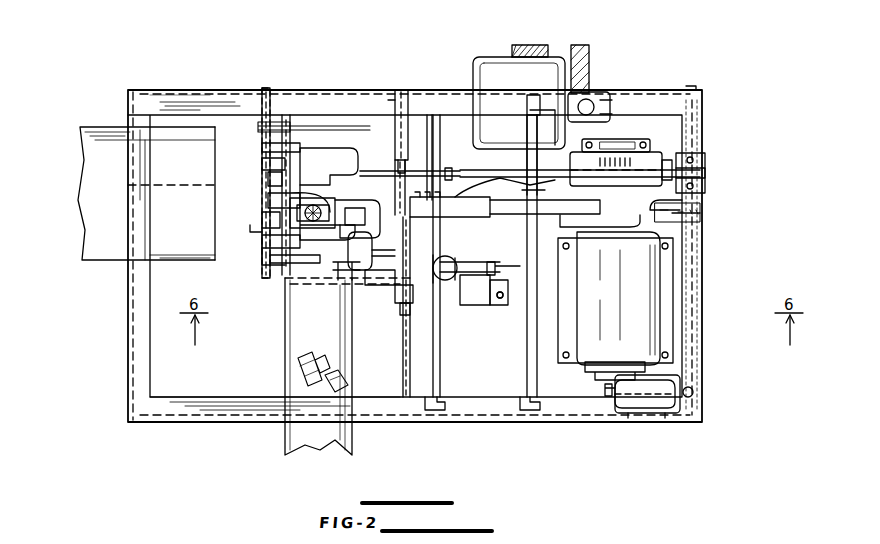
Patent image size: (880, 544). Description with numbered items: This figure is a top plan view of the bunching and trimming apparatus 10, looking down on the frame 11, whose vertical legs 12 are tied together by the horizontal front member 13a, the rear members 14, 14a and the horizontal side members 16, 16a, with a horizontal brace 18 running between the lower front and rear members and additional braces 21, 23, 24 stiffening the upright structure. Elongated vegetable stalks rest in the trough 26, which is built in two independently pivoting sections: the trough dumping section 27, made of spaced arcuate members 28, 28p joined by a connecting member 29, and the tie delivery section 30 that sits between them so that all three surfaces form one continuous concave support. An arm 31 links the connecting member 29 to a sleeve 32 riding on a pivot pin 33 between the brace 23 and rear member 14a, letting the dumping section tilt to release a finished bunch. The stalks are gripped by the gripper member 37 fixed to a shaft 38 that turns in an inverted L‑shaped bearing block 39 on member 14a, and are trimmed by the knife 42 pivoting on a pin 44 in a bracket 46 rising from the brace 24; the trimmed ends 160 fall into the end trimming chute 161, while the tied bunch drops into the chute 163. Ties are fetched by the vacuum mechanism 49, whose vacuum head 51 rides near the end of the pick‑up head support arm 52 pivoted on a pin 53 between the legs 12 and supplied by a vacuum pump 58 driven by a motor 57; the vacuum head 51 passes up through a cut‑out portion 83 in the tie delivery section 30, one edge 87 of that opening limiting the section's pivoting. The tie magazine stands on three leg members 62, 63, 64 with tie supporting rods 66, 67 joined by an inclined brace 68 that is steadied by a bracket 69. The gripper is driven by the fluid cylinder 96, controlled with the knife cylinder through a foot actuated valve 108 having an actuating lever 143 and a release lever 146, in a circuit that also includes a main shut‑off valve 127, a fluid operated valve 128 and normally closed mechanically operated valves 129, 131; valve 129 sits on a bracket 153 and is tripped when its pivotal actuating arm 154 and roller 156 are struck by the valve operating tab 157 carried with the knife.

The bunching and trimming apparatus 10 is at (103, 398).
The frame 11 is at (200, 422).
The vertical legs 12 is at (140, 88).
The horizontal front member 13a is at (195, 397).
The rear member 14 is at (210, 90).
The rear member 14a is at (172, 95).
The horizontal side member 16 is at (700, 216).
The horizontal side member 16a is at (708, 250).
The horizontal brace 18 is at (418, 130).
The brace 21 is at (410, 398).
The brace 23 is at (365, 288).
The brace 24 is at (292, 140).
The trough 26 is at (345, 140).
The trough dumping section 27 is at (318, 150).
The arcuate member 28 is at (272, 150).
The arcuate member 28p is at (295, 258).
The connecting member 29 is at (270, 179).
The tie delivery section 30 is at (272, 201).
The arm 31 is at (265, 167).
The sleeve 32 is at (265, 222).
The pivot pin 33 is at (262, 132).
The gripper member 37 is at (435, 190).
The shaft 38 is at (423, 150).
The bearing block 39 is at (393, 103).
The knife 42 is at (372, 272).
The pin 44 is at (408, 315).
The bracket 46 is at (405, 305).
The vacuum mechanism 49 is at (315, 200).
The vacuum head 51 is at (320, 215).
The pick-up head support arm 52 is at (388, 215).
The pin 53 is at (696, 88).
The motor 57 is at (660, 327).
The vacuum pump 58 is at (650, 145).
The leg member 62 is at (440, 412).
The leg member 63 is at (533, 412).
The leg member 64 is at (538, 103).
The tie supporting rod 66 is at (440, 385).
The tie supporting rod 67 is at (537, 385).
The inclined brace 68 is at (470, 192).
The bracket 69 is at (528, 130).
The cut-out portion 83 is at (345, 240).
The edge 87 is at (272, 243).
The fluid cylinder 96 is at (635, 165).
The foot actuated valve 108 is at (476, 58).
The main shut-off valve 127 is at (590, 105).
The fluid operated valve 128 is at (650, 415).
The mechanically operated valve 129 is at (496, 300).
The mechanically operated valve 131 is at (680, 198).
The actuating lever 143 is at (581, 45).
The release lever 146 is at (528, 45).
The bracket 153 is at (472, 300).
The pivotal actuating arm 154 is at (498, 283).
The roller 156 is at (485, 262).
The valve operating tab 157 is at (510, 263).
The trimmed ends 160 is at (325, 390).
The end trimming chute 161 is at (285, 440).
The chute 163 is at (105, 262).